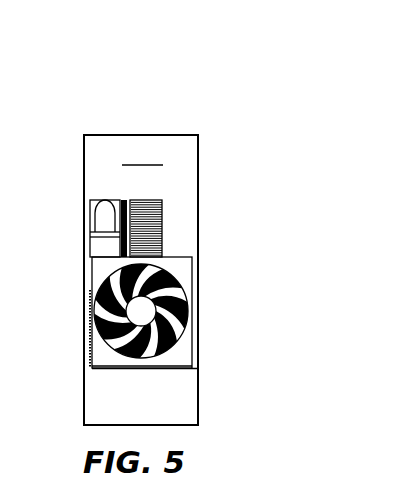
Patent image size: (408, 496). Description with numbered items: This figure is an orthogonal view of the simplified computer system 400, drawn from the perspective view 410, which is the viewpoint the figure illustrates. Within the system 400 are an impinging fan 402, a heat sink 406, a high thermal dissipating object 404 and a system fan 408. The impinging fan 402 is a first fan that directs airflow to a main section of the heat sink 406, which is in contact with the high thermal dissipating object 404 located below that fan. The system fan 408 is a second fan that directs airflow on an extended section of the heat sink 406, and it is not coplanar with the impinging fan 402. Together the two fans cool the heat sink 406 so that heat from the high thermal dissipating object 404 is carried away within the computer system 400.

The computer system 400 is at (143, 135).
The impinging fan 402 is at (97, 235).
The high thermal dissipating object 404 is at (178, 242).
The heat sink 406 is at (145, 208).
The system fan 408 is at (183, 340).
The perspective view 410 is at (142, 155).